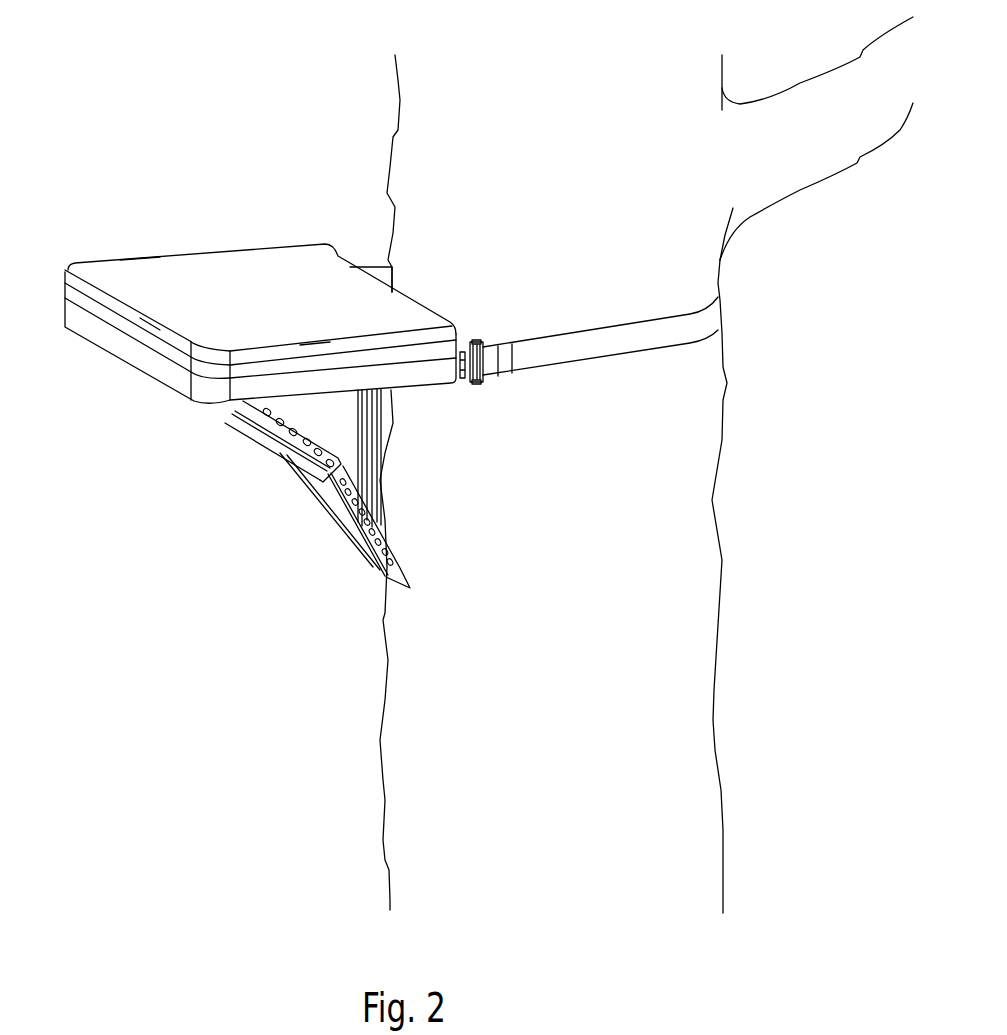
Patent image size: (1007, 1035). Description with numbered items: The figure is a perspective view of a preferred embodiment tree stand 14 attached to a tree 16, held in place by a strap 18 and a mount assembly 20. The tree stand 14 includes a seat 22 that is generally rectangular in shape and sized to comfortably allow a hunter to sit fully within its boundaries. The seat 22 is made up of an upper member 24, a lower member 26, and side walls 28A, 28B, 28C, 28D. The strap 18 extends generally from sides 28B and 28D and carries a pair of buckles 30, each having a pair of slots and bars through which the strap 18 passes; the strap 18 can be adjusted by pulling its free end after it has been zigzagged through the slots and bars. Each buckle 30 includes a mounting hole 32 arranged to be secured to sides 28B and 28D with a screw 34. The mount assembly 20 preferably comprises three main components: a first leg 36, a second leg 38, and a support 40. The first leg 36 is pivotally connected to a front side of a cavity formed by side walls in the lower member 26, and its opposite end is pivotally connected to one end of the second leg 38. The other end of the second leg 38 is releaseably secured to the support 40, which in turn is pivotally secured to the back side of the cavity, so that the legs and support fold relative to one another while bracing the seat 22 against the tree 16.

The tree stand 14 is at (215, 147).
The tree 16 is at (702, 472).
The strap 18 is at (710, 325).
The mount assembly 20 is at (237, 538).
The seat 22 is at (187, 265).
The upper member 24 is at (173, 318).
The lower member 26 is at (98, 340).
The side wall 28A is at (163, 380).
The side wall 28B is at (258, 383).
The side wall 28C is at (410, 302).
The side wall 28D is at (127, 258).
The buckle 30 is at (487, 337).
The mounting hole 32 is at (463, 345).
The screw 34 is at (462, 378).
The first leg 36 is at (282, 428).
The second leg 38 is at (345, 477).
The support 40 is at (373, 453).